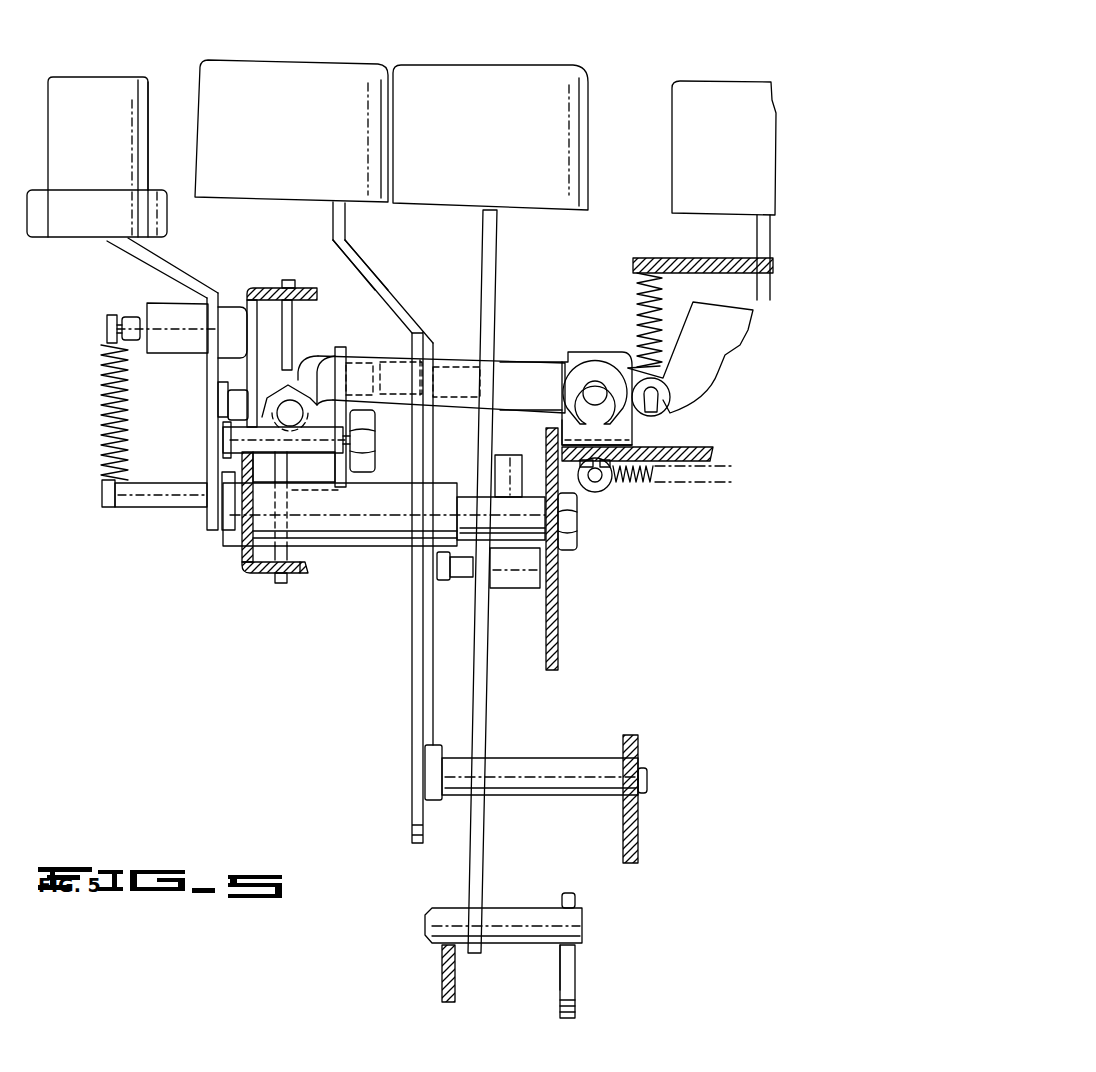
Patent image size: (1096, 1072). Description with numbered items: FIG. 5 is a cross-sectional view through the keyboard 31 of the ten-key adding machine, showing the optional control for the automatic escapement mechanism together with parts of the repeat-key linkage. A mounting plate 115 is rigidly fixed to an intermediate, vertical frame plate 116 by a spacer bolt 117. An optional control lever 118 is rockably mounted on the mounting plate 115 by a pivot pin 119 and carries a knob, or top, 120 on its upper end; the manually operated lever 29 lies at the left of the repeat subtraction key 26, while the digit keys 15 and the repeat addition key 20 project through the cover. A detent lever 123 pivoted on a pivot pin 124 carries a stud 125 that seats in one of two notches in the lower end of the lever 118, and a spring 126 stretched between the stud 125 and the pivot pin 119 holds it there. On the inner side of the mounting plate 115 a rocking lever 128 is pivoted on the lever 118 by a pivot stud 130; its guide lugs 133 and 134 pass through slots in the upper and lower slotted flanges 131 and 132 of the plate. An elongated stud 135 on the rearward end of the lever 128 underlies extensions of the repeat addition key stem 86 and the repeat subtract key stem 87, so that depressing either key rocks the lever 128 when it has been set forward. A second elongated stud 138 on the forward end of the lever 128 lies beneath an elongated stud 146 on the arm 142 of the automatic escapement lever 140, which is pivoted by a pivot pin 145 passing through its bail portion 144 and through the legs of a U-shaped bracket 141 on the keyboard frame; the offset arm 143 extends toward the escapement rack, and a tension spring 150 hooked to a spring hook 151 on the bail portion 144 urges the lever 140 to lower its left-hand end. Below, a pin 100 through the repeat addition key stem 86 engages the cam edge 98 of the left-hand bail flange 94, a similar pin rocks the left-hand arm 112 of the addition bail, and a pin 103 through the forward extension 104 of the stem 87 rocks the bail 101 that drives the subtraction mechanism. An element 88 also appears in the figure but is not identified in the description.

The digit keys 15 is at (680, 88).
The repeat addition key 20 is at (484, 211).
The repeat subtraction key 26 is at (334, 213).
The manually operated lever 29 is at (149, 80).
The keyboard 31 is at (681, 456).
The repeat addition key stem 86 is at (485, 256).
The repeat subtract key stem 87 is at (336, 245).
The key block 88 is at (288, 204).
The flange portion 94 is at (562, 998).
The cam edge 98 is at (567, 978).
The pin 100 is at (428, 939).
The bail 101 is at (639, 850).
The pin 103 is at (586, 760).
The forward extension 104 is at (405, 790).
The left-hand arm 112 is at (441, 993).
The mounting plate 115 is at (245, 565).
The intermediate vertical frame plate 116 is at (552, 648).
The spacer bolt 117 is at (384, 547).
The optional control lever 118 is at (212, 397).
The pivot pin 119 is at (107, 326).
The knob 120 is at (53, 155).
The detent lever 123 is at (228, 536).
The pivot pin 124 is at (283, 508).
The stud 125 is at (163, 508).
The spring 126 is at (101, 382).
The rocking lever 128 is at (356, 414).
The pivot stud 130 is at (220, 386).
The upper slotted flange 131 is at (327, 270).
The lower slotted flange 132 is at (303, 571).
The upwardly extending guide lug 133 is at (291, 326).
The downwardly extending guide lug 134 is at (275, 581).
The elongated stud 135 is at (398, 356).
The elongated stud 138 is at (226, 455).
The automatic escapement lever 140 is at (562, 360).
The U-shaped bracket 141 is at (562, 424).
The lever arm 142 is at (478, 361).
The lever arm 143 is at (731, 309).
The bail portion 144 is at (588, 355).
The pivot pin 145 is at (583, 393).
The elongated stud 146 is at (300, 372).
The tension spring 150 is at (637, 316).
The spring hook 151 is at (672, 415).